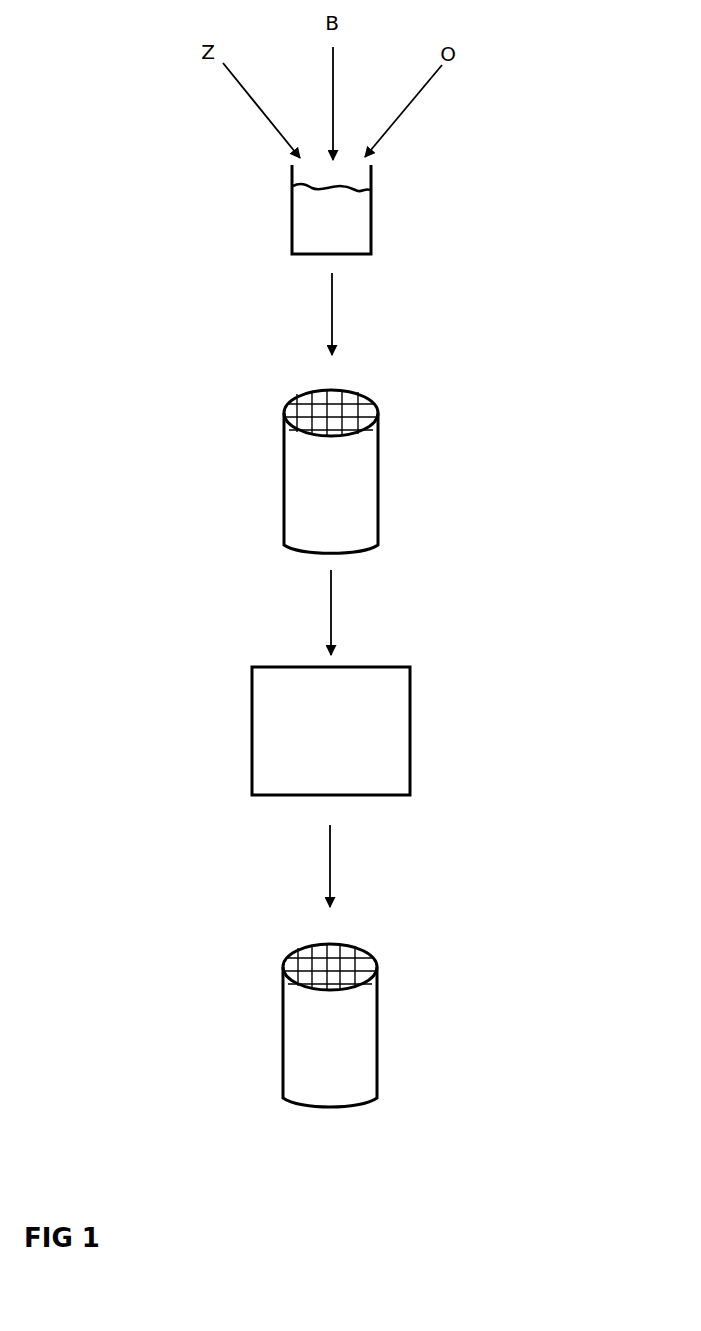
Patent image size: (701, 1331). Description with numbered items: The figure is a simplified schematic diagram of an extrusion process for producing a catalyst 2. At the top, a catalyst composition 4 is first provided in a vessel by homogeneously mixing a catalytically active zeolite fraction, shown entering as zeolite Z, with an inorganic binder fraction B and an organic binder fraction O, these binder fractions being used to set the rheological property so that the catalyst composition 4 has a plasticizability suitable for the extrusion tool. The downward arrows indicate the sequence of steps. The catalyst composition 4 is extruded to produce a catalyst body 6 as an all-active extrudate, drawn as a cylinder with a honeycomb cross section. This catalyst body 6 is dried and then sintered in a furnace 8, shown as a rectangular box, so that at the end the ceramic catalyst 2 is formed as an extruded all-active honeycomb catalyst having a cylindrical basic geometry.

The catalyst 2 is at (370, 1040).
The catalyst composition 4 is at (360, 228).
The catalyst body 6 is at (372, 472).
The furnace 8 is at (392, 735).